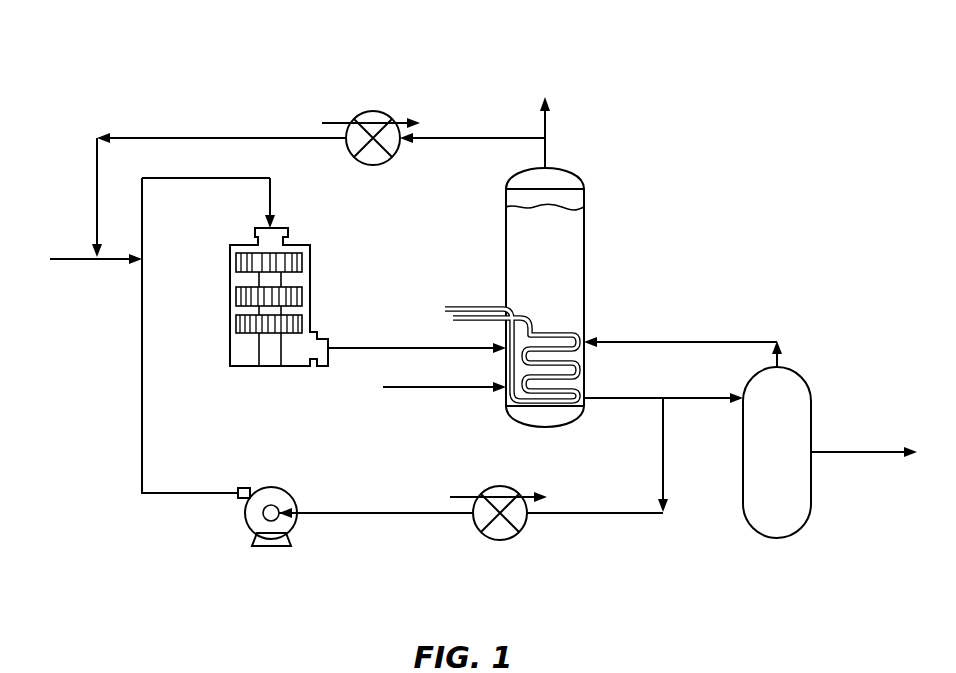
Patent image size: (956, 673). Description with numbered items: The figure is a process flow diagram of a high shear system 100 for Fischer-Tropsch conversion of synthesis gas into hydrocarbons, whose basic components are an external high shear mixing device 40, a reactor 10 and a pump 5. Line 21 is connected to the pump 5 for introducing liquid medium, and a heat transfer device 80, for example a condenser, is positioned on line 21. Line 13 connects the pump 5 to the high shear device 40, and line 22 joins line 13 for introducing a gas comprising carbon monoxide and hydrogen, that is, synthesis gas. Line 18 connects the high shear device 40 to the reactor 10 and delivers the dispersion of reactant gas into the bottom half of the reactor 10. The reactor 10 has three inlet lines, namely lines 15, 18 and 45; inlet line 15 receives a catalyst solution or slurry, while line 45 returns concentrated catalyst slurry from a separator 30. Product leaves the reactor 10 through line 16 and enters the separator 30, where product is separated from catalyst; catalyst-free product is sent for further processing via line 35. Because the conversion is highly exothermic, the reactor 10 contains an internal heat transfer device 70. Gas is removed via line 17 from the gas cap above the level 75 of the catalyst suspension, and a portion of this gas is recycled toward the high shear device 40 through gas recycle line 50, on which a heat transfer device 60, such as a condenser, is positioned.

The high shear system 100 is at (682, 56).
The reactor 10 is at (584, 265).
The level 75 is at (570, 196).
The line 17 is at (545, 150).
The internal heat transfer device 70 is at (489, 308).
The external high shear mixing device 40 is at (300, 243).
The line 18 is at (430, 347).
The inlet line 15 is at (447, 388).
The line 45 is at (672, 342).
The line 16 is at (615, 398).
The separator 30 is at (777, 452).
The line 35 is at (847, 452).
The line 21 is at (404, 508).
The heat transfer device 80 is at (500, 540).
The pump 5 is at (270, 487).
The line 13 is at (142, 372).
The line 22 is at (74, 258).
The gas recycle line 50 is at (497, 138).
The heat transfer device 60 is at (373, 166).